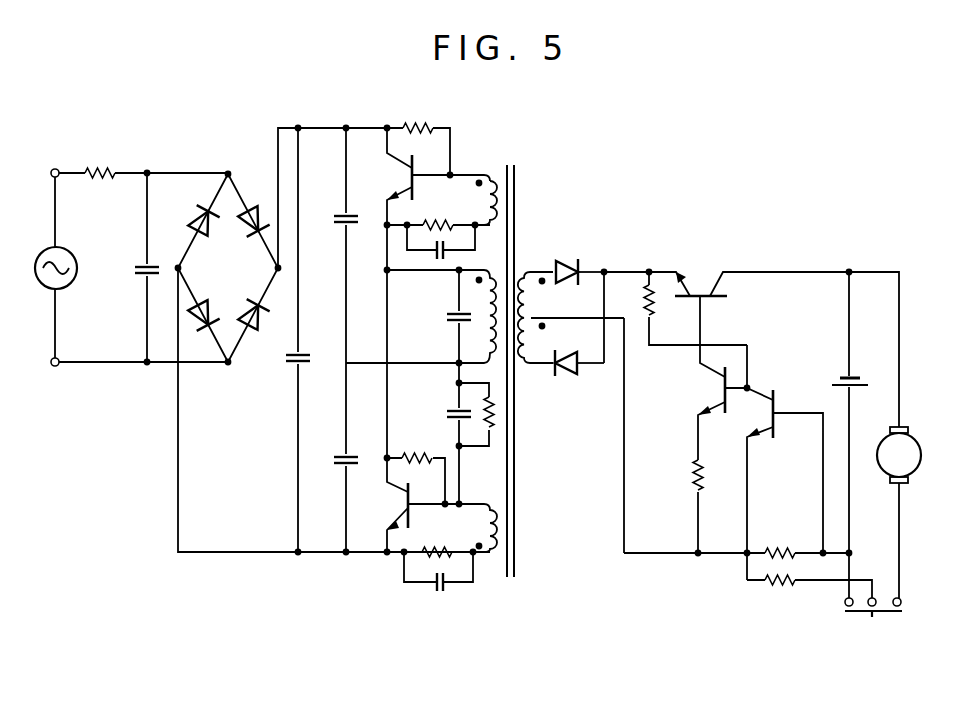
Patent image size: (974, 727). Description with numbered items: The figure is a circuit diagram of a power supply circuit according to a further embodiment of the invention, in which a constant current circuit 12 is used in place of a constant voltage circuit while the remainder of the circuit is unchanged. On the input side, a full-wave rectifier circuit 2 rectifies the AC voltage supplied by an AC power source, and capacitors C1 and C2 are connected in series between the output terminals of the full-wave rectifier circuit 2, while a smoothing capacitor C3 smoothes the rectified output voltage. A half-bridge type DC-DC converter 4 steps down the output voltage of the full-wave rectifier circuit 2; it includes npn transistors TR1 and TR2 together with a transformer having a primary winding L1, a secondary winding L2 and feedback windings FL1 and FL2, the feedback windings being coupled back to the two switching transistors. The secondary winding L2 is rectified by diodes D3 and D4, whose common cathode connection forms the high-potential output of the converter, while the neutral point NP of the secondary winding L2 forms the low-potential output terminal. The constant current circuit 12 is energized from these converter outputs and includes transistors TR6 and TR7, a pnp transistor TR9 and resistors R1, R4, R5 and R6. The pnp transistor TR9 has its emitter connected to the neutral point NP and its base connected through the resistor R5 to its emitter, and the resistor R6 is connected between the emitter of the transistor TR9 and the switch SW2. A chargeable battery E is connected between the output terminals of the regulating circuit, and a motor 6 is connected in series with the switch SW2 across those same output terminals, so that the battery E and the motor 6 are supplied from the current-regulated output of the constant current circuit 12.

The full-wave rectifier circuit 2 is at (214, 187).
The half-bridge type DC-DC converter 4 is at (522, 353).
The motor 6 is at (913, 446).
The constant current circuit 12 is at (705, 264).
The capacitor C1 is at (322, 214).
The capacitor C2 is at (320, 456).
The smoothing capacitor C3 is at (278, 360).
The npn transistor TR1 is at (406, 177).
The npn transistor TR2 is at (400, 512).
The feedback winding FL1 is at (496, 174).
The feedback winding FL2 is at (490, 560).
The primary winding L1 is at (475, 293).
The secondary winding L2 is at (526, 365).
The neutral point NP is at (538, 319).
The diode D3 is at (564, 261).
The diode D4 is at (585, 365).
The resistor R1 is at (646, 295).
The transistor TR6 is at (730, 288).
The transistor TR7 is at (715, 389).
The pnp transistor TR9 is at (771, 392).
The resistor R4 is at (688, 478).
The resistor R5 is at (780, 550).
The resistor R6 is at (780, 585).
The chargeable battery E is at (864, 383).
The switch SW2 is at (887, 618).